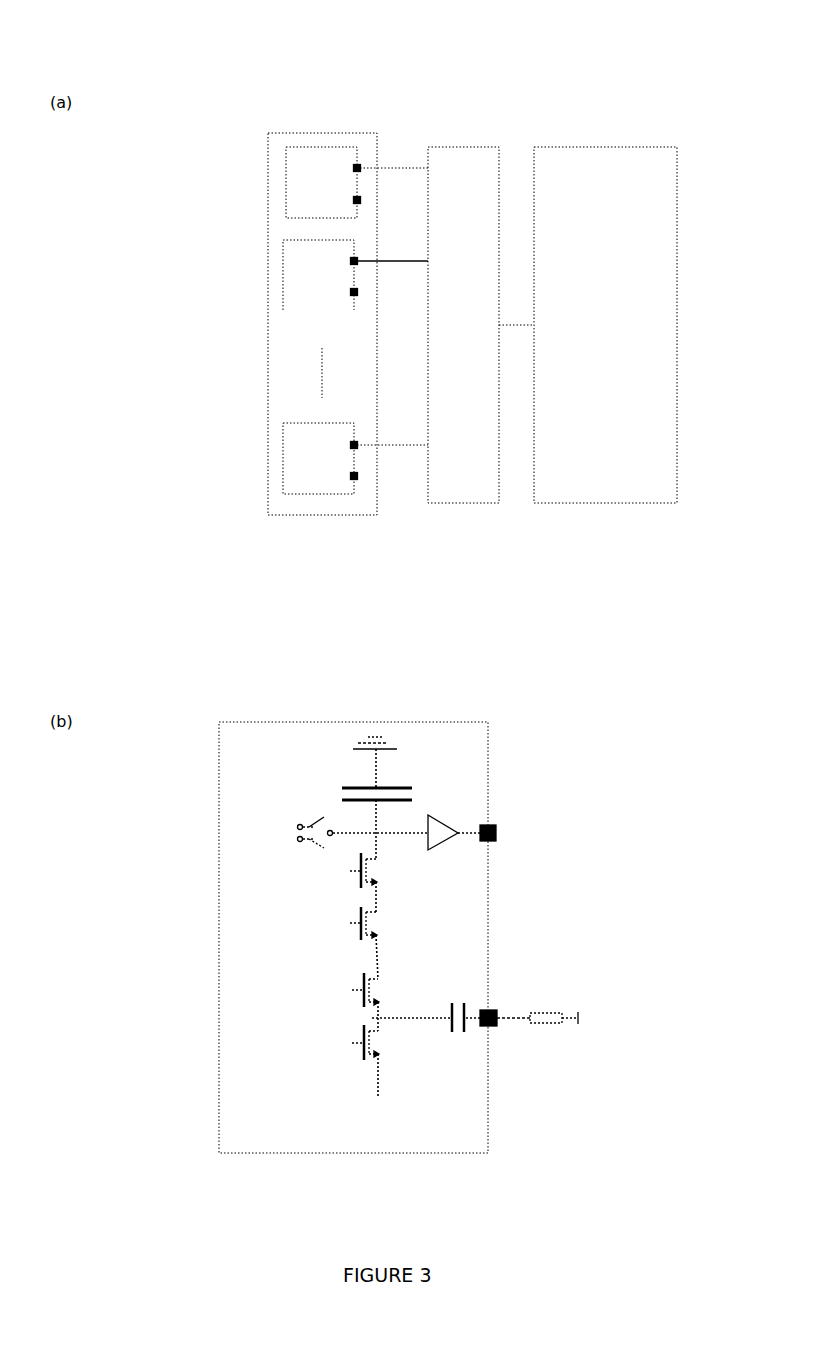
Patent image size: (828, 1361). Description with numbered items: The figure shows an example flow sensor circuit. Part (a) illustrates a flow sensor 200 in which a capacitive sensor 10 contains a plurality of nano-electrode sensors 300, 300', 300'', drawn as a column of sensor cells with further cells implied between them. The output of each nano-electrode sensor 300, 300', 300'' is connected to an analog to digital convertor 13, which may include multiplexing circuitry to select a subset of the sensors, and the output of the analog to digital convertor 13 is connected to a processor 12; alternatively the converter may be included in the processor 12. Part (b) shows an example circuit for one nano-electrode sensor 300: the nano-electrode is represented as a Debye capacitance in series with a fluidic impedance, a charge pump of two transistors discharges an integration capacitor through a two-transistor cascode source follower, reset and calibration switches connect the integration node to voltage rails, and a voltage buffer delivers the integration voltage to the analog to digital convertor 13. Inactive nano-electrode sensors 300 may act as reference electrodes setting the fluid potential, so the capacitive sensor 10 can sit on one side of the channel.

The capacitive sensor 10 is at (304, 110).
The processor 12 is at (623, 125).
The analog to digital convertor 13 is at (467, 125).
The flow sensor 200 is at (466, 584).
The nano-electrode sensor 300 is at (385, 679).
The nano-electrode sensor 300' is at (307, 275).
The nano-electrode sensor 300'' is at (306, 479).